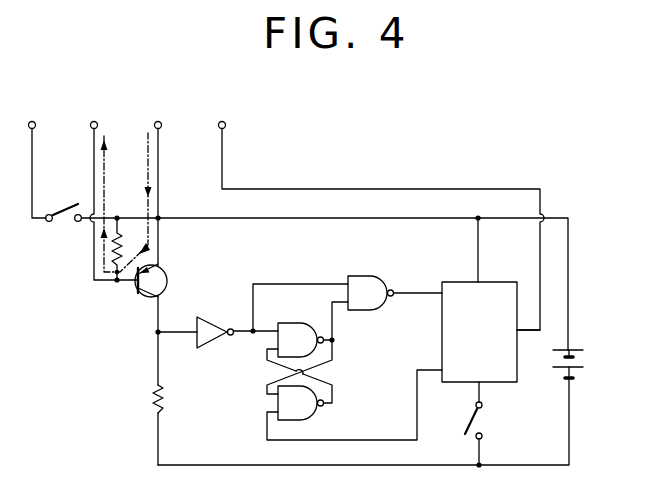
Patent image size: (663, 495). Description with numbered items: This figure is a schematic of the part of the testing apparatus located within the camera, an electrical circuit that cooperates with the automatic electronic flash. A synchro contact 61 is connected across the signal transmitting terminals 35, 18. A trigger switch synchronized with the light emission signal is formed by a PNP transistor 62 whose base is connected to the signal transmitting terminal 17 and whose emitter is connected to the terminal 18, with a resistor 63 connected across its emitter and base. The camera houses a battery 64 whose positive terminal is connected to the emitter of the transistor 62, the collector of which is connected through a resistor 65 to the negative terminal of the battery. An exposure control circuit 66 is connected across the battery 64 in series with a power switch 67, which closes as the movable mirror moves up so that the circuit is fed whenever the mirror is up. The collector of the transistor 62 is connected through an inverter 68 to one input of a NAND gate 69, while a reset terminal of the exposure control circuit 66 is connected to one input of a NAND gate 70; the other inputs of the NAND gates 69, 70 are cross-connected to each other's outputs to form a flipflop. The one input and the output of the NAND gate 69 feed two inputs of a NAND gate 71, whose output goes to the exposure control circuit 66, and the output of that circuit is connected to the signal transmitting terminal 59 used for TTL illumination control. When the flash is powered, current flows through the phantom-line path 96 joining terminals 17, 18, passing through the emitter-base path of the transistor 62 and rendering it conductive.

The signal transmitting terminal 35 is at (33, 156).
The signal transmitting terminal 17 is at (109, 188).
The signal transmitting terminal 18 is at (159, 180).
The signal transmitting terminal 59 is at (374, 213).
The synchro contact 61 is at (67, 205).
The path 96 is at (107, 197).
The resistor 63 is at (122, 238).
The PNP transistor 62 is at (168, 281).
The inverter 68 is at (219, 325).
The NAND gate 69 is at (292, 325).
The NAND gate 70 is at (312, 409).
The NAND gate 71 is at (376, 287).
The exposure control circuit 66 is at (444, 342).
The power switch 67 is at (472, 414).
The battery 64 is at (576, 359).
The resistor 65 is at (166, 400).